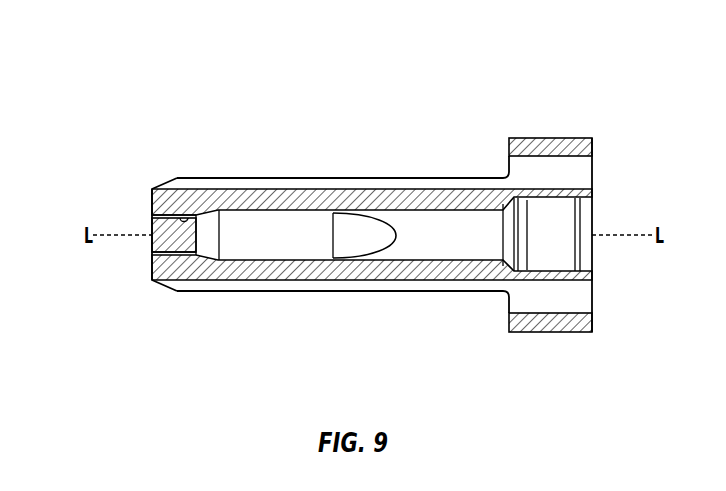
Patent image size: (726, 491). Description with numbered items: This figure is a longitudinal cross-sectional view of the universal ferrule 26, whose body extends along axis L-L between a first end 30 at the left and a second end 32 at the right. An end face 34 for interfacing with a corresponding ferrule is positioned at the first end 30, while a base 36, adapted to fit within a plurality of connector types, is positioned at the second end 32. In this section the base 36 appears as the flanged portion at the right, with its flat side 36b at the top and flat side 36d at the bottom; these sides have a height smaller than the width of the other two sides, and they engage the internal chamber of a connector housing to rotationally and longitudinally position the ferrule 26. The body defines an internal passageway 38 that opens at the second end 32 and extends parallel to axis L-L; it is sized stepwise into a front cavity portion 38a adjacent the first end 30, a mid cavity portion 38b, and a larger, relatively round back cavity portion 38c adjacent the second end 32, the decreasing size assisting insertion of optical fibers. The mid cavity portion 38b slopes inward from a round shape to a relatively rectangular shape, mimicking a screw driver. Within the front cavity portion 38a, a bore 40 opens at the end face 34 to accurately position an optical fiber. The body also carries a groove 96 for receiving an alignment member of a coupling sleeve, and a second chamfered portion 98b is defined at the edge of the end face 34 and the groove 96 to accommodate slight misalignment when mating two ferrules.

The universal ferrule 26 is at (388, 334).
The first end 30 is at (106, 273).
The second end 32 is at (664, 206).
The end face 34 is at (151, 194).
The base 36 is at (547, 360).
The side 36b is at (535, 138).
The side 36d is at (562, 333).
The internal passageway 38 is at (420, 216).
The front cavity portion 38a is at (185, 256).
The mid cavity portion 38b is at (293, 220).
The back cavity portion 38c is at (563, 215).
The bore 40 is at (196, 216).
The groove 96 is at (257, 293).
The second chamfered portion 98b is at (160, 187).